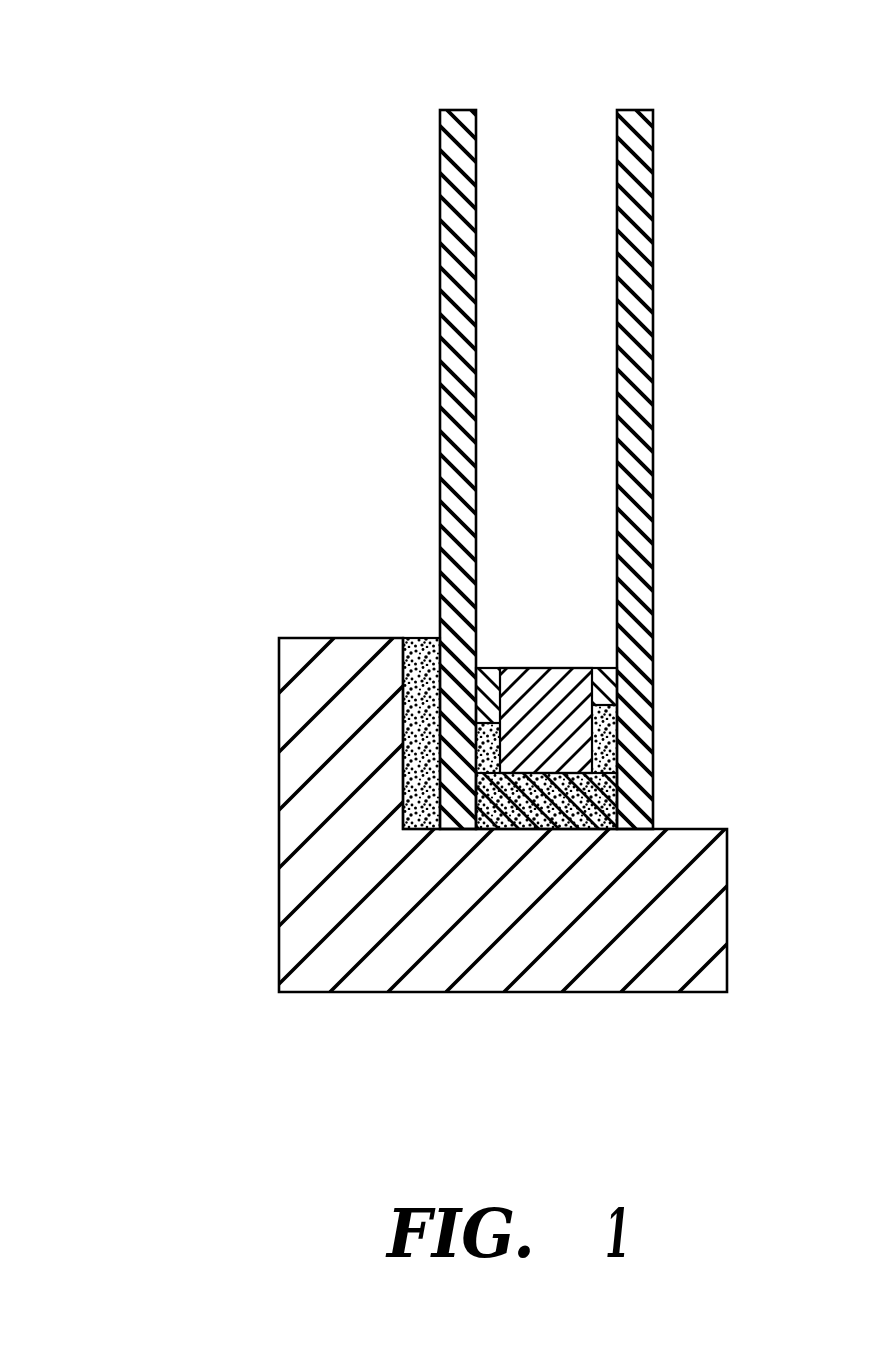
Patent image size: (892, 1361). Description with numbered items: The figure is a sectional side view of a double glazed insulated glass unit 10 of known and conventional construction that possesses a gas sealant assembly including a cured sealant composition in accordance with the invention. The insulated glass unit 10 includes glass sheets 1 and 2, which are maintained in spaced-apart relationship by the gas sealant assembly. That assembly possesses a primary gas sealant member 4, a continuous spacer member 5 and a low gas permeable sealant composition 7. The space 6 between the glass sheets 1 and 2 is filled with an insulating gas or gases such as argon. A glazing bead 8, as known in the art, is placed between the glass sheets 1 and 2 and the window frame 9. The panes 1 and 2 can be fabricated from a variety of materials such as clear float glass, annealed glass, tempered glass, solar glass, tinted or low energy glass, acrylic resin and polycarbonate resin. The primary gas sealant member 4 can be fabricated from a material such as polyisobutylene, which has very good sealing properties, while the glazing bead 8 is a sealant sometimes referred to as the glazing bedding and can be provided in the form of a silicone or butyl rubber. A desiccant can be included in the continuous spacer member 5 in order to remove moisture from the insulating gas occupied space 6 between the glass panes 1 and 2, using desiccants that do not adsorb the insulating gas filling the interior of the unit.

The glass sheet 1 is at (445, 285).
The glass sheet 2 is at (647, 268).
The primary gas sealant member 4 is at (650, 668).
The continuous spacer member 5 is at (562, 668).
The space 6 is at (537, 200).
The low gas permeable sealant composition 7 is at (653, 795).
The glazing bead 8 is at (422, 638).
The window frame 9 is at (300, 813).
The insulated glass unit 10 is at (216, 240).